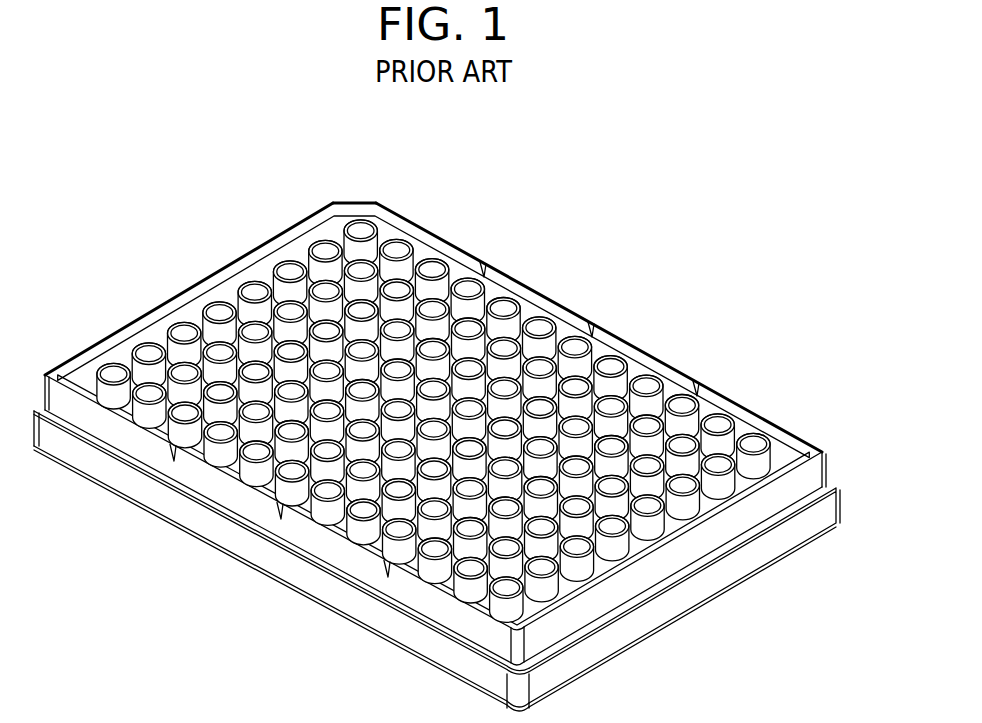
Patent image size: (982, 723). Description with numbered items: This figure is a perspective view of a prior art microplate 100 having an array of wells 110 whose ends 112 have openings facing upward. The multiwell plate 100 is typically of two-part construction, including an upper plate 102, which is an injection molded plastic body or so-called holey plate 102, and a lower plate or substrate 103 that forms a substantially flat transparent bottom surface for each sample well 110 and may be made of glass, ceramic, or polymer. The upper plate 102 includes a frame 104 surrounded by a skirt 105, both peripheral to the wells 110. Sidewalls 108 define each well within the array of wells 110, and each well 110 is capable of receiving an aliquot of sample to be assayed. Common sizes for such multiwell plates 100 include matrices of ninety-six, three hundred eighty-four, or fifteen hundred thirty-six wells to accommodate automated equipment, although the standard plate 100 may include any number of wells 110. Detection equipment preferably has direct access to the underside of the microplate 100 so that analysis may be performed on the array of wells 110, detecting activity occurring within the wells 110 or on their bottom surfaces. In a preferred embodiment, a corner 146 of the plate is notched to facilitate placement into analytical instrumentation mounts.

The microplate 100 is at (507, 222).
The upper plate 102 is at (260, 246).
The lower plate/substrate 103 is at (271, 583).
The frame 104 is at (817, 480).
The skirt 105 is at (817, 520).
The sidewalls 108 is at (503, 602).
The wells 110 is at (287, 493).
The ends 112 is at (577, 342).
The corner 146 is at (351, 212).